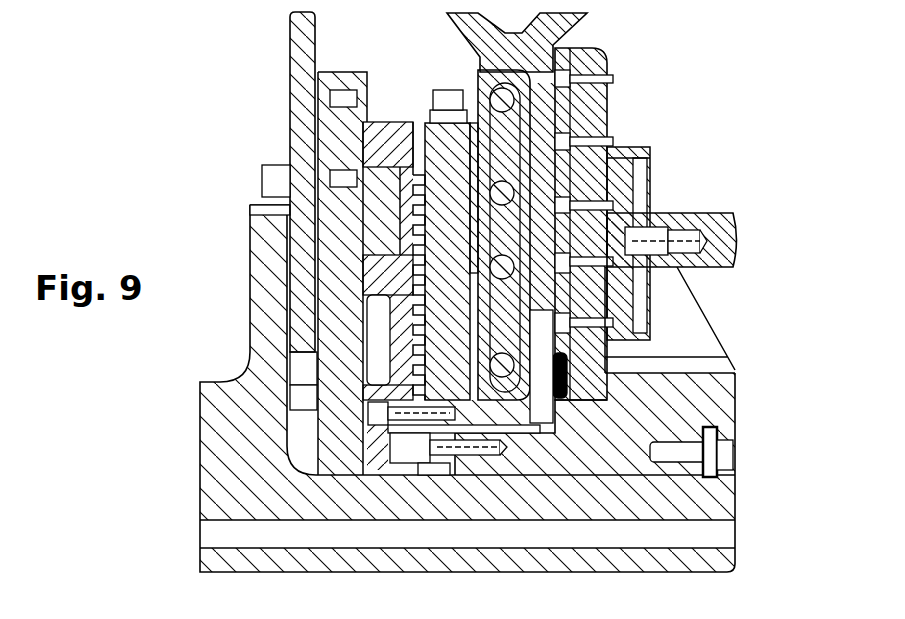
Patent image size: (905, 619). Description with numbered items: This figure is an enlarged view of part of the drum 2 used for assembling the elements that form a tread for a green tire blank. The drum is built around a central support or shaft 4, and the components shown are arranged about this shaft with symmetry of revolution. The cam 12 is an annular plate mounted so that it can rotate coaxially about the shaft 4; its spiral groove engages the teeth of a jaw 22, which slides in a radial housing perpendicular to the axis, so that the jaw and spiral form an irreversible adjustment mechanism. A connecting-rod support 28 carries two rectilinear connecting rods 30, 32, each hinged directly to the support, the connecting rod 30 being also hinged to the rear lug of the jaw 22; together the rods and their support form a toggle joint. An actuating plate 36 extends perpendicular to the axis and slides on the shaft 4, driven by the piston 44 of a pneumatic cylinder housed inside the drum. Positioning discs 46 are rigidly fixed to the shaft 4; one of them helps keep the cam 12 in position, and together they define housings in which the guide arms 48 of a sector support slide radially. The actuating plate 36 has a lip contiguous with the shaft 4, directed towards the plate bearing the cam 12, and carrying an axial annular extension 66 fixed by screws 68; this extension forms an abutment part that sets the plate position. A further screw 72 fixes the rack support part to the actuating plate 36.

The drum 2 is at (658, 92).
The central support or shaft 4 is at (237, 563).
The cam 12 is at (387, 210).
The jaw 22 is at (447, 188).
The connecting-rod support 28 is at (533, 225).
The connecting rod 30 is at (518, 342).
The connecting rod 32 is at (515, 134).
The actuating plate 36 is at (588, 58).
The piston 44 is at (735, 220).
The positioning disc 46 is at (318, 436).
The arm 48 is at (300, 28).
The axial annular extension 66 is at (443, 463).
The screw 68 is at (423, 448).
The screw 72 is at (638, 452).